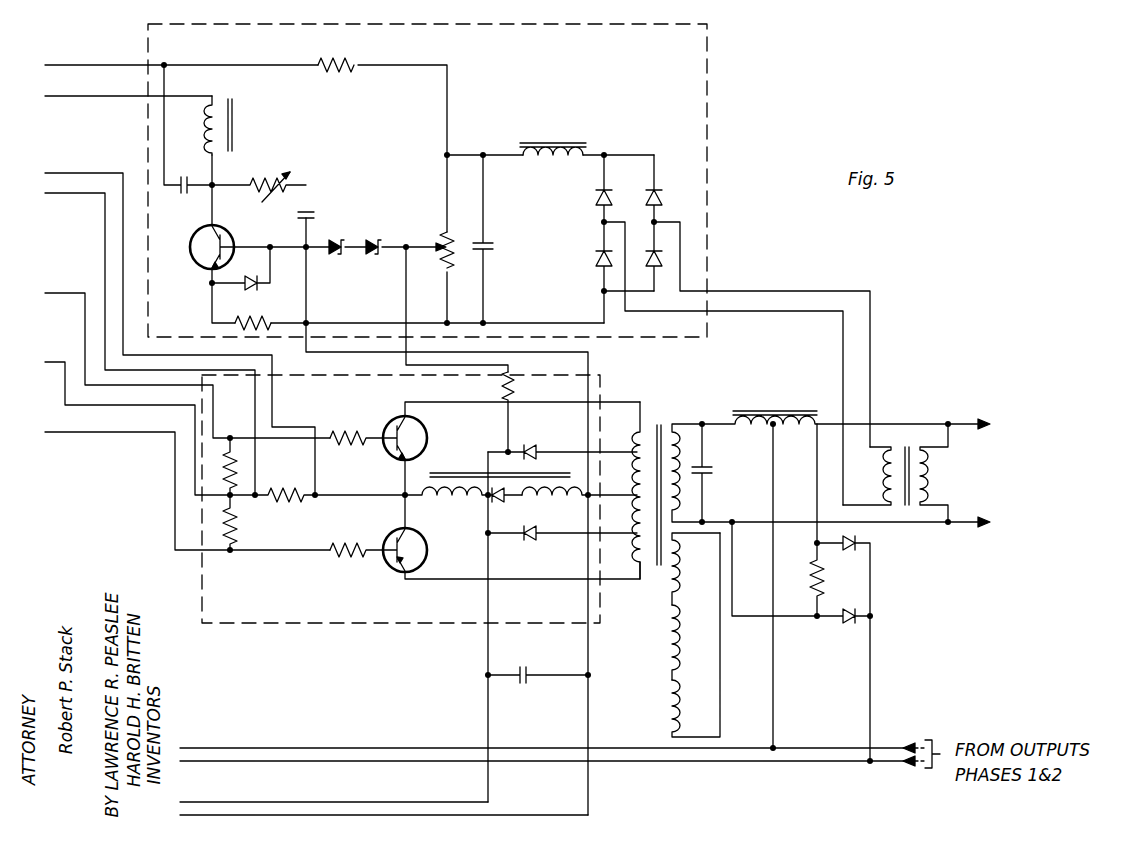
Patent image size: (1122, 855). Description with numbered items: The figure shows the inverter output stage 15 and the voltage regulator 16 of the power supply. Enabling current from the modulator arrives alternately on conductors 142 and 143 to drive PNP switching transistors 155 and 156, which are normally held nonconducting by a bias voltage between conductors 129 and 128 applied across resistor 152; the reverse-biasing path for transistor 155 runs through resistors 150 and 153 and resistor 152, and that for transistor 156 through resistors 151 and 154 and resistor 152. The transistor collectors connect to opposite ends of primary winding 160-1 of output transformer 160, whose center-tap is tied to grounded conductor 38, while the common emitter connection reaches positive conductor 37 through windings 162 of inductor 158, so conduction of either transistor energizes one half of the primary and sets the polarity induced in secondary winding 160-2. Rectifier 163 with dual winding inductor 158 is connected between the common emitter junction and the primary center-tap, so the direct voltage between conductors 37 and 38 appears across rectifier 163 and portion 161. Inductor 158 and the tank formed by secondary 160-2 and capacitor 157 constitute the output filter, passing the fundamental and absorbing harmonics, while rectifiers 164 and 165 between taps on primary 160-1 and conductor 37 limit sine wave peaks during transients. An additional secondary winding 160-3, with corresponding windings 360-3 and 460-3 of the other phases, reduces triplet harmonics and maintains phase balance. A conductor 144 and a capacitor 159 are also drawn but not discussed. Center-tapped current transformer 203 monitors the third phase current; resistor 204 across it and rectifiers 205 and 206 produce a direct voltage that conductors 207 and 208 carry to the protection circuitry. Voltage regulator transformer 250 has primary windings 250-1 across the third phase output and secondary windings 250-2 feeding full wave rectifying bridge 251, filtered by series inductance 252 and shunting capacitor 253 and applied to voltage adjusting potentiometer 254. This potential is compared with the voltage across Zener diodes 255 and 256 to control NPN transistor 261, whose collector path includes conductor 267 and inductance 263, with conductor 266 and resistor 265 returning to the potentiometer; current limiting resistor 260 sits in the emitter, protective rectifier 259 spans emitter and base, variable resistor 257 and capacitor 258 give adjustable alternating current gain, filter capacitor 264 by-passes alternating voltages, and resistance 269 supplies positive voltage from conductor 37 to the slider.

The inverter output stage 15 is at (600, 382).
The voltage regulator 16 is at (707, 78).
The positive conductor 37 is at (218, 802).
The grounded conductor 38 is at (272, 815).
The conductor 128 is at (68, 161).
The conductor 129 is at (68, 181).
The conductor 142 is at (55, 294).
The conductor 143 is at (57, 433).
The conductor 144 is at (53, 349).
The resistor 150 is at (245, 434).
The resistor 151 is at (234, 522).
The resistor 152 is at (286, 500).
The resistor 153 is at (368, 420).
The resistor 154 is at (340, 546).
The PNP switching transistor 155 is at (420, 425).
The PNP switching transistor 156 is at (420, 538).
The capacitor 157 is at (712, 468).
The dual winding inductor 158 is at (496, 488).
The capacitor 159 is at (518, 672).
The output transformer 160 is at (666, 563).
The primary winding 160-1 is at (632, 436).
The secondary winding 160-2 is at (676, 424).
The additional secondary winding 160-3 is at (670, 590).
The secondary winding 360-3 is at (670, 646).
The secondary winding 460-3 is at (670, 700).
The inductor portion 161 is at (540, 498).
The inductor winding 162 is at (428, 498).
The rectifier 163 is at (494, 503).
The rectifier 164 is at (526, 444).
The rectifier 165 is at (528, 541).
The center-tapped current transformer 203 is at (800, 410).
The resistor 204 is at (824, 592).
The rectifier 205 is at (856, 541).
The rectifier 206 is at (846, 623).
The conductor 207 is at (240, 748).
The conductor 208 is at (298, 761).
The voltage regulator transformer 250 is at (909, 472).
The primary winding 250-1 is at (930, 476).
The secondary winding 250-2 is at (888, 490).
The full wave rectifying bridge 251 is at (646, 221).
The series inductance 252 is at (540, 143).
The shunting capacitor 253 is at (484, 242).
The voltage adjusting potentiometer 254 is at (440, 240).
The voltage regulating Zener diode 255 is at (338, 256).
The voltage regulating Zener diode 256 is at (374, 256).
The variable resistor 257 is at (250, 184).
The capacitor 258 is at (312, 210).
The protective rectifier 259 is at (258, 290).
The current limiting resistor 260 is at (262, 318).
The NPN transistor 261 is at (226, 232).
The inductance 263 is at (213, 96).
The filter capacitor 264 is at (180, 193).
The resistor 265 is at (342, 62).
The conductor 266 is at (62, 66).
The conductor 267 is at (62, 97).
The resistance 269 is at (500, 390).